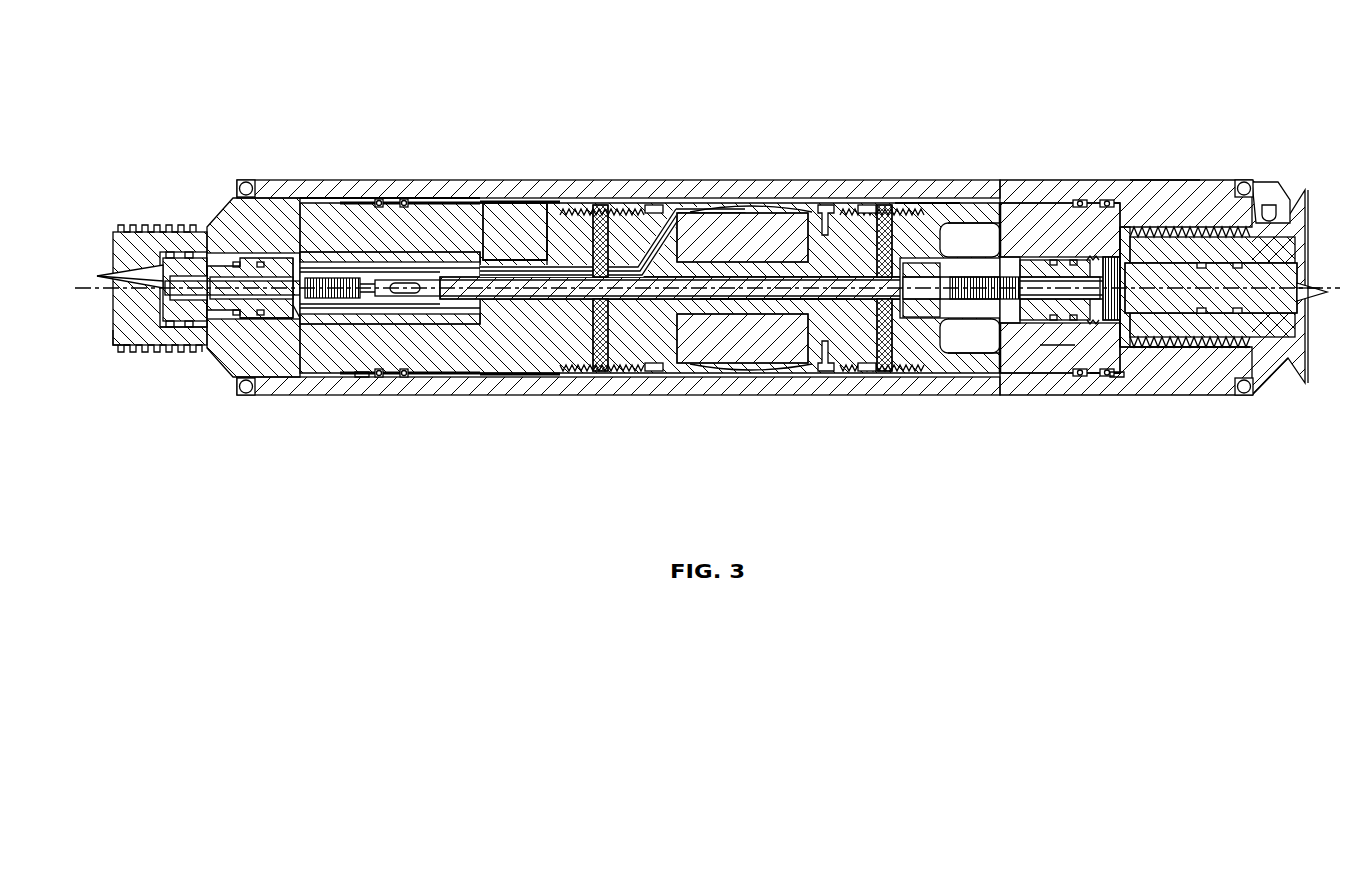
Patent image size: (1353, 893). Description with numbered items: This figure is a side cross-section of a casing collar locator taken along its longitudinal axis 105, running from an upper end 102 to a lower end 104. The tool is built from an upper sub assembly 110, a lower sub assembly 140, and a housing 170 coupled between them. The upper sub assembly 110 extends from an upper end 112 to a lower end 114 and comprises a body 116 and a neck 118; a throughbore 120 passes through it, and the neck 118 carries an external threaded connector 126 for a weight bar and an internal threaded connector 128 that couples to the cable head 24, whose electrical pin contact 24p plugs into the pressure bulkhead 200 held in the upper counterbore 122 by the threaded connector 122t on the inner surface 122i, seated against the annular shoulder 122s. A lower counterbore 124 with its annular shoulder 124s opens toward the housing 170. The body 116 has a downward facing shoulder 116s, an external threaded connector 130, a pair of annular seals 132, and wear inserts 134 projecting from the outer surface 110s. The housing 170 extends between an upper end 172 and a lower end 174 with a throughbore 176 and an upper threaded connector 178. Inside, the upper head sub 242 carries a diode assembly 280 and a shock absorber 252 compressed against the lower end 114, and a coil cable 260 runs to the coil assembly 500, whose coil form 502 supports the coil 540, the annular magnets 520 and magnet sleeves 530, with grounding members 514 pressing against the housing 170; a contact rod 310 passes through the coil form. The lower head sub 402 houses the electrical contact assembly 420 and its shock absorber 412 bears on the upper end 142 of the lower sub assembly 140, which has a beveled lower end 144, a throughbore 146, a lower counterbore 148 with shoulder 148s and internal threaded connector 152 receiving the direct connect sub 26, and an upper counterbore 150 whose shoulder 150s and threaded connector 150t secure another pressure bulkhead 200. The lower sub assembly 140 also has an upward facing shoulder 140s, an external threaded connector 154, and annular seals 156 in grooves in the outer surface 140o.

The cable head 24 is at (130, 320).
The electrical pin contact 24p is at (183, 258).
The direct connect sub 26 is at (1300, 260).
The upper end 102 is at (112, 232).
The lower end 104 is at (1268, 190).
The longitudinal axis 105 is at (100, 272).
The upper sub assembly 110 is at (262, 188).
The outer surface 110s is at (310, 195).
The upper end 112 is at (113, 345).
The lower end 114 is at (535, 372).
The body 116 is at (345, 373).
The annular shoulder 116s is at (356, 203).
The neck 118 is at (166, 345).
The throughbore 120 is at (242, 240).
The upper counterbore 122 is at (222, 350).
The inner surface 122i is at (222, 262).
The threaded connector 122t is at (240, 318).
The annular shoulder 122s is at (268, 348).
The lower counterbore 124 is at (437, 372).
The annular shoulder 124s is at (290, 310).
The external threaded connector 126 is at (138, 225).
The internal threaded connector 128 is at (128, 352).
The external threaded connector 130 is at (458, 203).
The annular seals 132 is at (404, 204).
The inserts 134 is at (246, 180).
The lower sub assembly 140 is at (1190, 195).
The annular shoulder 140s is at (1115, 200).
The outer surface 140o is at (1153, 192).
The upper end 142 is at (985, 373).
The lower beveled end 144 is at (1290, 360).
The throughbore 146 is at (1128, 340).
The lower counterbore 148 is at (1215, 228).
The annular shoulder 148s is at (1120, 232).
The upper counterbore 150 is at (1025, 198).
The annular shoulder 150s is at (1018, 330).
The threaded connector 150t is at (1088, 373).
The internal threaded connector 152 is at (1195, 360).
The external threaded connector 154 is at (1008, 200).
The annular seals 156 is at (1107, 199).
The housing 170 is at (497, 180).
The upper end 172 is at (363, 380).
The lower end 174 is at (1120, 380).
The throughbore 176 is at (455, 373).
The upper threaded connector 178 is at (1082, 320).
The pressure bulkhead 200 is at (276, 262).
The upper head sub 242 is at (583, 203).
The annular shock absorber 252 is at (528, 203).
The coil cable 260 is at (697, 210).
The diode assembly 280 is at (438, 270).
The contact rod 310 is at (778, 299).
The lower head sub 402 is at (905, 203).
The annular shock absorber 412 is at (940, 203).
The electrical contact assembly 420 is at (972, 190).
The coil assembly 500 is at (665, 203).
The coil form 502 is at (822, 203).
The grounding members 514 is at (752, 205).
The annular magnets 520 is at (608, 372).
The magnet sleeves 530 is at (648, 206).
The coil 540 is at (778, 204).